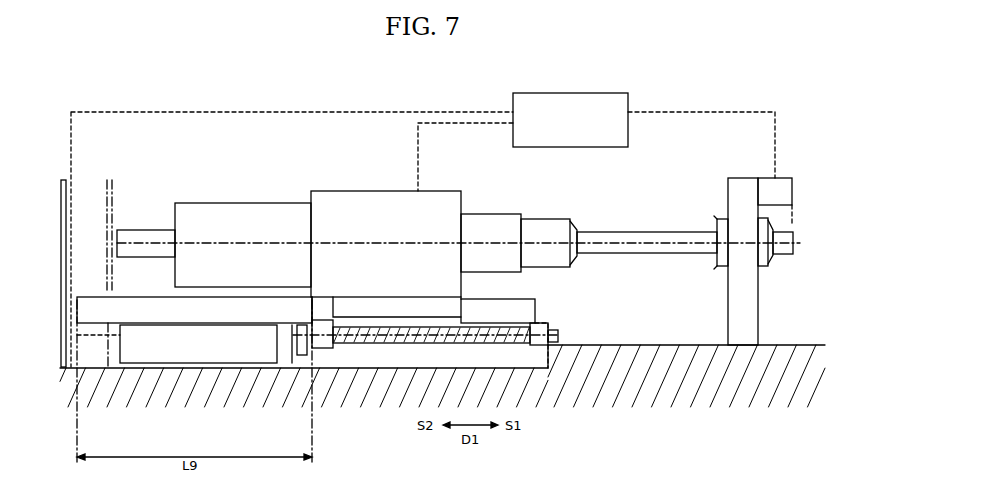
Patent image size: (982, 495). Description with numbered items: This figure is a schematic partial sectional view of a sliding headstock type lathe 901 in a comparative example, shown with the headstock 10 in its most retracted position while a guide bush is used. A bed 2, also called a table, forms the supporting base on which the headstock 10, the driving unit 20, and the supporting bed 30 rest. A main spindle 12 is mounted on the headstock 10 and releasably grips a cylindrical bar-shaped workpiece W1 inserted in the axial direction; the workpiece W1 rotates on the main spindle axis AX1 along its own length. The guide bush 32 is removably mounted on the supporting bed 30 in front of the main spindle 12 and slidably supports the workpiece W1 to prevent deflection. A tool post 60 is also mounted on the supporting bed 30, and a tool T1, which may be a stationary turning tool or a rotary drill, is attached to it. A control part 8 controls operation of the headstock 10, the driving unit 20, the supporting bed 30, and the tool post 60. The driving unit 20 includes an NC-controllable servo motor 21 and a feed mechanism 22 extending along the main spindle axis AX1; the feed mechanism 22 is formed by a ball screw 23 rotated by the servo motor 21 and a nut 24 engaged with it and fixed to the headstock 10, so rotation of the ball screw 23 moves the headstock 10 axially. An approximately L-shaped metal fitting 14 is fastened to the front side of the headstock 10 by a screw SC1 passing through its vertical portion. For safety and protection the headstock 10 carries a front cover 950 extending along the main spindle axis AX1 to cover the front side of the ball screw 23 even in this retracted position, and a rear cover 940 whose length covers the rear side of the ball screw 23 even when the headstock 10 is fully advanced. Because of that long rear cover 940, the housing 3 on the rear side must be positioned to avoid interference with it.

The sliding headstock type lathe 901 is at (100, 93).
The control part 8 is at (523, 142).
The housing 3 is at (60, 195).
The headstock 10 is at (349, 216).
The metal fitting 14 is at (461, 296).
The main spindle 12 is at (555, 219).
The guide bush 32 is at (718, 222).
The supporting bed 30 is at (759, 306).
The tool post 60 is at (790, 178).
The rear cover 940 is at (162, 296).
The front cover 950 is at (533, 298).
The bed 2 is at (672, 345).
The driving unit 20 is at (318, 383).
The servo motor 21 is at (157, 352).
The feed mechanism 22 is at (370, 357).
The ball screw 23 is at (428, 343).
The nut 24 is at (330, 348).
The main spindle axis AX1 is at (390, 242).
The screw SC1 is at (462, 296).
The workpiece W1 is at (685, 232).
The tool T1 is at (795, 225).